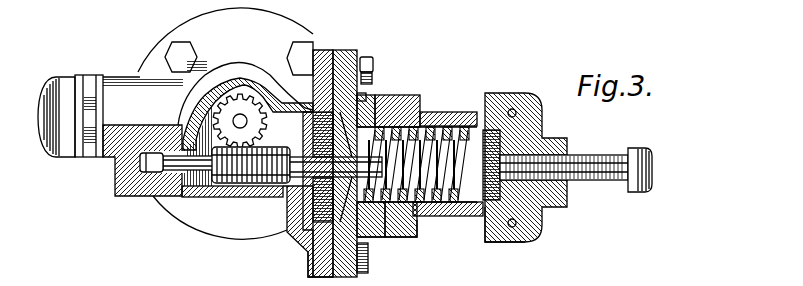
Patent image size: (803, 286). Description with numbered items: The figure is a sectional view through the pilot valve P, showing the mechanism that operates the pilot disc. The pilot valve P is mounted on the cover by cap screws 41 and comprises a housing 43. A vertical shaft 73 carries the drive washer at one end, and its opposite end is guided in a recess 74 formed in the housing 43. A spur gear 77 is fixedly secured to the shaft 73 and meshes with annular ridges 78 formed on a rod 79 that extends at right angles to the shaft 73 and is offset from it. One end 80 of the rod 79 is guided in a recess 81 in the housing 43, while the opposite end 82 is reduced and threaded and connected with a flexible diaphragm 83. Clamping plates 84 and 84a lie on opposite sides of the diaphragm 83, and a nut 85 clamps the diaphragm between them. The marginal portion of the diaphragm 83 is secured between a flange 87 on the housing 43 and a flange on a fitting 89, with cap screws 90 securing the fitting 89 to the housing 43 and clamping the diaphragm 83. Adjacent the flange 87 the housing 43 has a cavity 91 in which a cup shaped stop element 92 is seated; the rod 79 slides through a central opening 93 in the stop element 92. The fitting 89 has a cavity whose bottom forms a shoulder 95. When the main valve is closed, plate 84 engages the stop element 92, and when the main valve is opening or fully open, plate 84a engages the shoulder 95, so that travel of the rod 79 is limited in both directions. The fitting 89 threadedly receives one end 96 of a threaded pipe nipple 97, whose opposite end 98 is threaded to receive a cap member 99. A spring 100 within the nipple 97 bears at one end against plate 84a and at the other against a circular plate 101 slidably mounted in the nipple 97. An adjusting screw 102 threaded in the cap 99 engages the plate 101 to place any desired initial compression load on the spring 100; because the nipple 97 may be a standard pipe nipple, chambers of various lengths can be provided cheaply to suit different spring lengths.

The cap screws 41 is at (168, 44).
The housing 43 is at (115, 188).
The vertical shaft 73 is at (236, 123).
The recess 74 is at (370, 237).
The spur gear 77 is at (248, 84).
The annular ridges 78 is at (248, 183).
The rod 79 is at (320, 157).
The end of rod 80 is at (172, 172).
The recess 81 is at (155, 170).
The opposite end of rod 82 is at (404, 108).
The flexible diaphragm 83 is at (338, 53).
The clamping plate 84 is at (371, 68).
The clamping plate 84a is at (361, 96).
The nut 85 is at (380, 110).
The flange 87 is at (308, 257).
The fitting 89 is at (407, 238).
The cap screws 90 is at (368, 58).
The cavity 91 is at (290, 233).
The cup shaped stop element 92 is at (323, 52).
The central opening 93 is at (293, 153).
The shoulder 95 is at (388, 237).
The end of nipple 96 is at (420, 111).
The threaded pipe nipple 97 is at (448, 112).
The opposite end of nipple 98 is at (483, 225).
The cap member 99 is at (520, 93).
The spring 100 is at (437, 217).
The circular plate 101 is at (478, 110).
The adjusting screw 102 is at (603, 183).
The pilot valve P is at (215, 234).